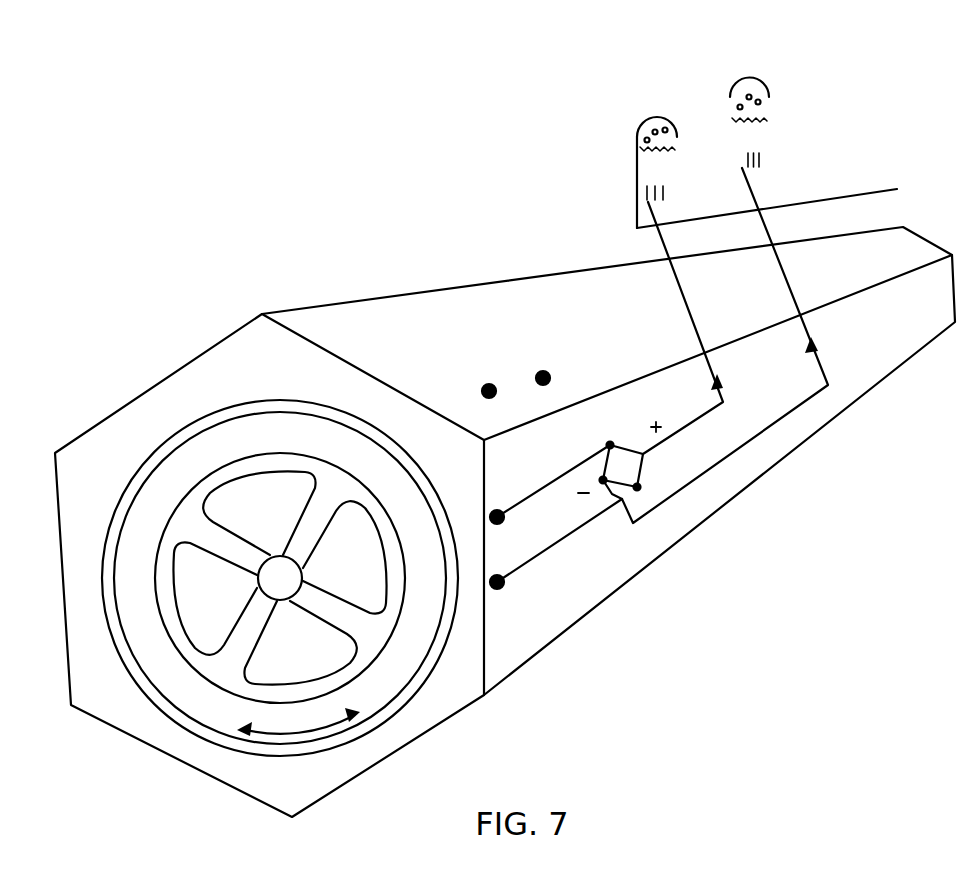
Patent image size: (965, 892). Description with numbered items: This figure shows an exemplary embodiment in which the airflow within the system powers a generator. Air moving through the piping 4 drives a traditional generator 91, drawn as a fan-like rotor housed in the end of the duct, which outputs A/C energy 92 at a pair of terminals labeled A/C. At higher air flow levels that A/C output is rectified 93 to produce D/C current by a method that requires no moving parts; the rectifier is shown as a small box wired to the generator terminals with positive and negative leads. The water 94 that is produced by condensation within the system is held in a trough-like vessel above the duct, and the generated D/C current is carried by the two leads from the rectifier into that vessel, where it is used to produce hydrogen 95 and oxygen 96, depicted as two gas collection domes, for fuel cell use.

The piping 4 is at (785, 128).
The generator 91 is at (301, 733).
The A/C energy 92 is at (489, 384).
The rectifier 93 is at (659, 378).
The water 94 is at (767, 182).
The hydrogen 95 is at (665, 117).
The oxygen 96 is at (758, 78).